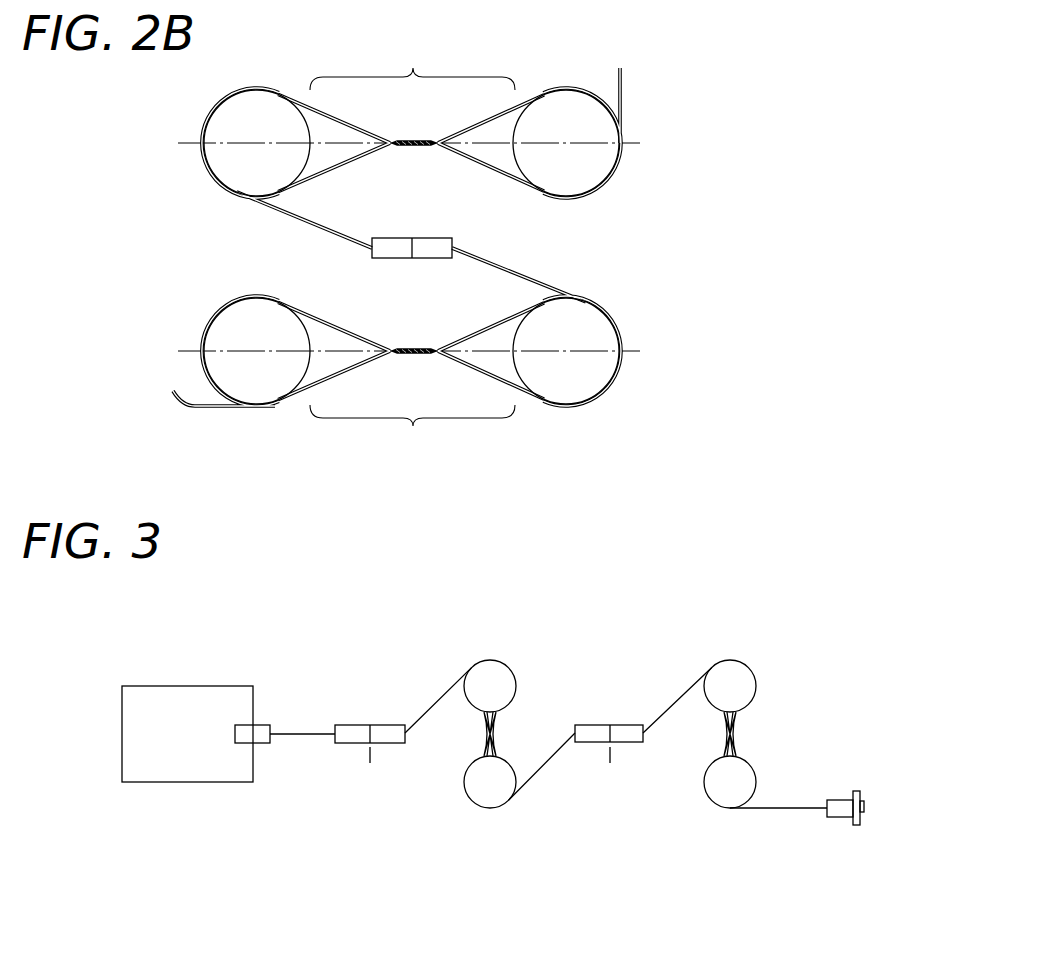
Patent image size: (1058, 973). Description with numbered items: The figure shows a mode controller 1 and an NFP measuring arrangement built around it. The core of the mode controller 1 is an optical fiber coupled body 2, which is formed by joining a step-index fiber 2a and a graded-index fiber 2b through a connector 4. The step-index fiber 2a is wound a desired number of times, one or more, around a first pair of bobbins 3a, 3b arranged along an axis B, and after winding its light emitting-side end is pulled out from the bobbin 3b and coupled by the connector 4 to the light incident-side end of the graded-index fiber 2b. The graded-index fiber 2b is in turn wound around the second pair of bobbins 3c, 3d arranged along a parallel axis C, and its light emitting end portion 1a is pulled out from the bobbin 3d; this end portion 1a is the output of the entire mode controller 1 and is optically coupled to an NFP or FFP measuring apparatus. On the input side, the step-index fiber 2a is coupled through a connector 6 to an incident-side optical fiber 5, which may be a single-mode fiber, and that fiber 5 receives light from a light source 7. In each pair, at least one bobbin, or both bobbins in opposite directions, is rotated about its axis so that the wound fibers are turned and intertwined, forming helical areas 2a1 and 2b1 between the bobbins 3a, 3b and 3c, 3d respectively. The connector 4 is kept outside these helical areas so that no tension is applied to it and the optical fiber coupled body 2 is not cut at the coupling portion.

In FIG. 2B, the mode controller 1 is at (190, 252).
In FIG. 3, the mode controller 1 is at (618, 588).
In FIG. 3, the light emitting end portion 1a is at (874, 832).
In FIG. 2B, the optical fiber coupled body 2 is at (634, 254).
In FIG. 3, the optical fiber coupled body 2 is at (555, 823).
In FIG. 2B, the step-index fiber (SIF) 2a is at (497, 266).
In FIG. 3, the step-index fiber (SIF) 2a is at (430, 705).
In FIG. 2B, the graded-index fiber (GIF) 2b is at (340, 237).
In FIG. 3, the graded-index fiber (GIF) 2b is at (675, 703).
In FIG. 2B, the helical area 2a1 is at (414, 334).
In FIG. 3, the helical area 2a1 is at (470, 733).
In FIG. 2B, the helical area 2b1 is at (408, 162).
In FIG. 3, the helical area 2b1 is at (710, 733).
In FIG. 2B, the bobbin 3a is at (257, 325).
In FIG. 3, the bobbin 3a is at (490, 680).
In FIG. 2B, the bobbin 3b is at (567, 380).
In FIG. 3, the bobbin 3b is at (490, 793).
In FIG. 2B, the bobbin 3c is at (257, 120).
In FIG. 3, the bobbin 3c is at (728, 680).
In FIG. 2B, the bobbin 3d is at (567, 170).
In FIG. 3, the bobbin 3d is at (732, 793).
In FIG. 2B, the connector 4 is at (455, 237).
In FIG. 3, the connector 4 is at (590, 725).
In FIG. 3, the incident-side optical fiber 5 is at (300, 736).
In FIG. 3, the connector 6 is at (350, 725).
In FIG. 3, the light source 7 is at (185, 686).